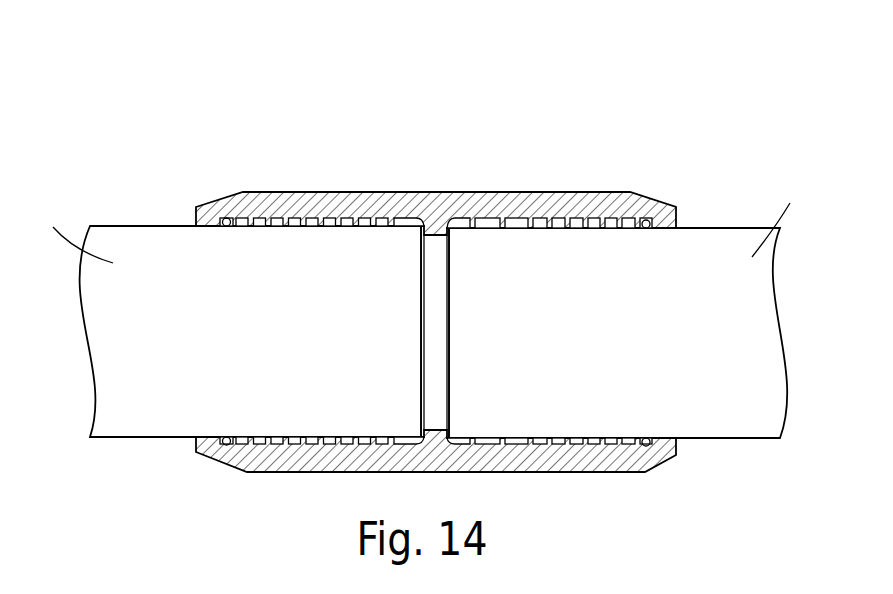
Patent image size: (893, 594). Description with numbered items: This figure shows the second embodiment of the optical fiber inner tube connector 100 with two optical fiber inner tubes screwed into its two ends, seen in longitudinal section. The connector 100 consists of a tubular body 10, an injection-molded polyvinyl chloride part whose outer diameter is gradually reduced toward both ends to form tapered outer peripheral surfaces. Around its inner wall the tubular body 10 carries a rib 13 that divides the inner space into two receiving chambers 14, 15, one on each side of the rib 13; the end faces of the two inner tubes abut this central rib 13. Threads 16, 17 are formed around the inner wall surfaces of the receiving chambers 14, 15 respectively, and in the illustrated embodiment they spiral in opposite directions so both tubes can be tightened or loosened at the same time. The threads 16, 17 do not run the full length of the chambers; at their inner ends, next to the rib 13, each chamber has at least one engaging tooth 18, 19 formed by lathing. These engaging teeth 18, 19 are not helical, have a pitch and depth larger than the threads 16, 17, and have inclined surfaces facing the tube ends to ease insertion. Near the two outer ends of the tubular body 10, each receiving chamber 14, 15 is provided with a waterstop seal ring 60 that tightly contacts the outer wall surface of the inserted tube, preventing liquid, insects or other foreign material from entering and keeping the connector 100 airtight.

The optical fiber inner tube connector 100 is at (430, 246).
The tubular body 10 is at (355, 200).
The rib 13 is at (435, 248).
The receiving chamber 14 is at (193, 223).
The receiving chamber 15 is at (675, 223).
The thread 16 is at (272, 217).
The thread 17 is at (600, 220).
The engaging tooth 18 is at (397, 218).
The engaging tooth 19 is at (478, 220).
The waterstop seal ring 60 is at (223, 217).